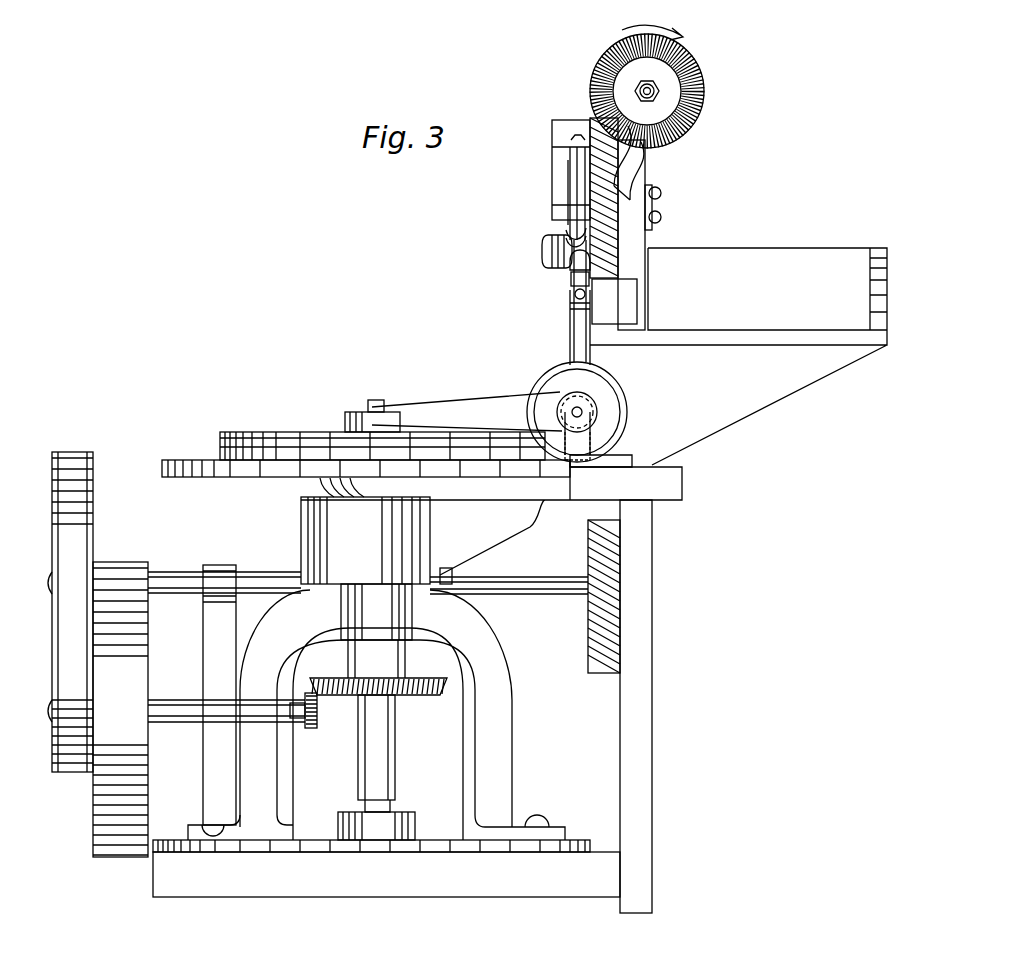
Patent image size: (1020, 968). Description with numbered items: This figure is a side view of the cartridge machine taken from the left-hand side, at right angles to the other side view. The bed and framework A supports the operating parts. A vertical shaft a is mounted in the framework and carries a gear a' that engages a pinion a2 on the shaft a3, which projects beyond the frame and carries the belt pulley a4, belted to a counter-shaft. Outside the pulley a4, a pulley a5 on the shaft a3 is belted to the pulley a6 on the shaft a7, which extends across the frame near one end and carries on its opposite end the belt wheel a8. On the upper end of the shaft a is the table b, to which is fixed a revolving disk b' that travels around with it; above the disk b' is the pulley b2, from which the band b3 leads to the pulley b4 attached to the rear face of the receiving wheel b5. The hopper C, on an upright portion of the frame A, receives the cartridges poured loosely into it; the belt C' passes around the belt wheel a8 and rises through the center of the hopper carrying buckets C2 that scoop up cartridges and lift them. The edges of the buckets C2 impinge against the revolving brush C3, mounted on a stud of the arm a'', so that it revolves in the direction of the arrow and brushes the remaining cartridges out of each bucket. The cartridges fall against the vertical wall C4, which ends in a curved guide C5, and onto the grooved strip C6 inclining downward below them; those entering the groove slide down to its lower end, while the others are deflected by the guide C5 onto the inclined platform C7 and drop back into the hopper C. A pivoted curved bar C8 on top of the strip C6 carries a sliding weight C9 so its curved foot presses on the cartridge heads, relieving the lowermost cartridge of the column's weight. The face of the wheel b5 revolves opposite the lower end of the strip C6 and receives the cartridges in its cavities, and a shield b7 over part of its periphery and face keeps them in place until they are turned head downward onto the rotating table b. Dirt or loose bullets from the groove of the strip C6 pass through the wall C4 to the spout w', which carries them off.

The revolving brush C3 is at (700, 70).
The arm a'' is at (647, 163).
The belt C' is at (560, 170).
The vertical wall C4 is at (566, 192).
The curved guide C5 is at (566, 230).
The buckets C2 is at (606, 220).
The spout w' is at (548, 251).
The sliding weight C9 is at (572, 276).
The grooved strip C6 is at (575, 294).
The curved bar C8 is at (572, 308).
The inclined platform C7 is at (614, 301).
The hopper C is at (738, 356).
The pulley b4 is at (626, 398).
The receiving wheel b5 is at (595, 412).
The shield b7 is at (626, 428).
The band b3 is at (460, 402).
The pulley b2 is at (352, 405).
The revolving disk b' is at (382, 441).
The table b is at (422, 511).
The bed and framework A is at (402, 705).
The vertical shaft a is at (376, 740).
The gear a' is at (379, 696).
The pinion a2 is at (310, 728).
The shaft a3 is at (172, 724).
The shaft a7 is at (550, 580).
The belt wheel a8 is at (588, 600).
The belt pulley a4 is at (148, 657).
The pulley a6 is at (94, 453).
The pulley a5 is at (58, 665).